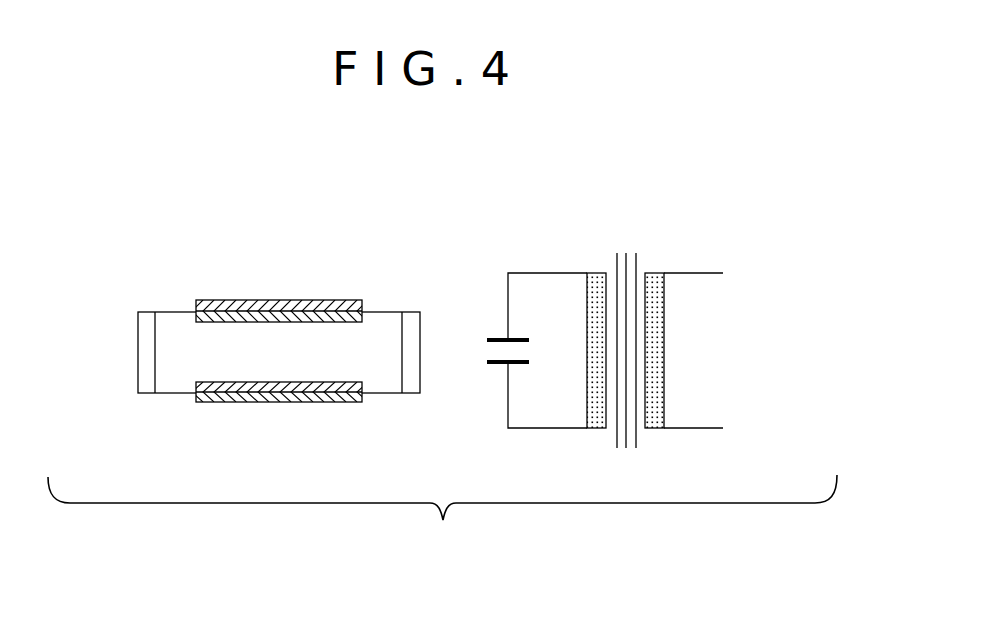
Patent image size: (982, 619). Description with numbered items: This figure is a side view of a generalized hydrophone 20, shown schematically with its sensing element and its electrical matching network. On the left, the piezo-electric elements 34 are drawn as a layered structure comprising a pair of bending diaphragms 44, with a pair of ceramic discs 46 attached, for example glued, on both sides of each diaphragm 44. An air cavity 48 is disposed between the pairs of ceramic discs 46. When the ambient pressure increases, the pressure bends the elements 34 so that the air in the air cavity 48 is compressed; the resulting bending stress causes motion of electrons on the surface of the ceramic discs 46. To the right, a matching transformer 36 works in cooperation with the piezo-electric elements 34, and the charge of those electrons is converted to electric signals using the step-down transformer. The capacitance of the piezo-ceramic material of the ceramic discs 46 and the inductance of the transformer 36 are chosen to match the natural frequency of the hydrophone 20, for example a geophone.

The piezo-electric elements 34 is at (128, 292).
The bending diaphragms 44 is at (378, 306).
The ceramic discs 46 is at (196, 313).
The air cavity 48 is at (378, 352).
The hydrophone 20 is at (627, 183).
The matching transformer 36 is at (727, 265).